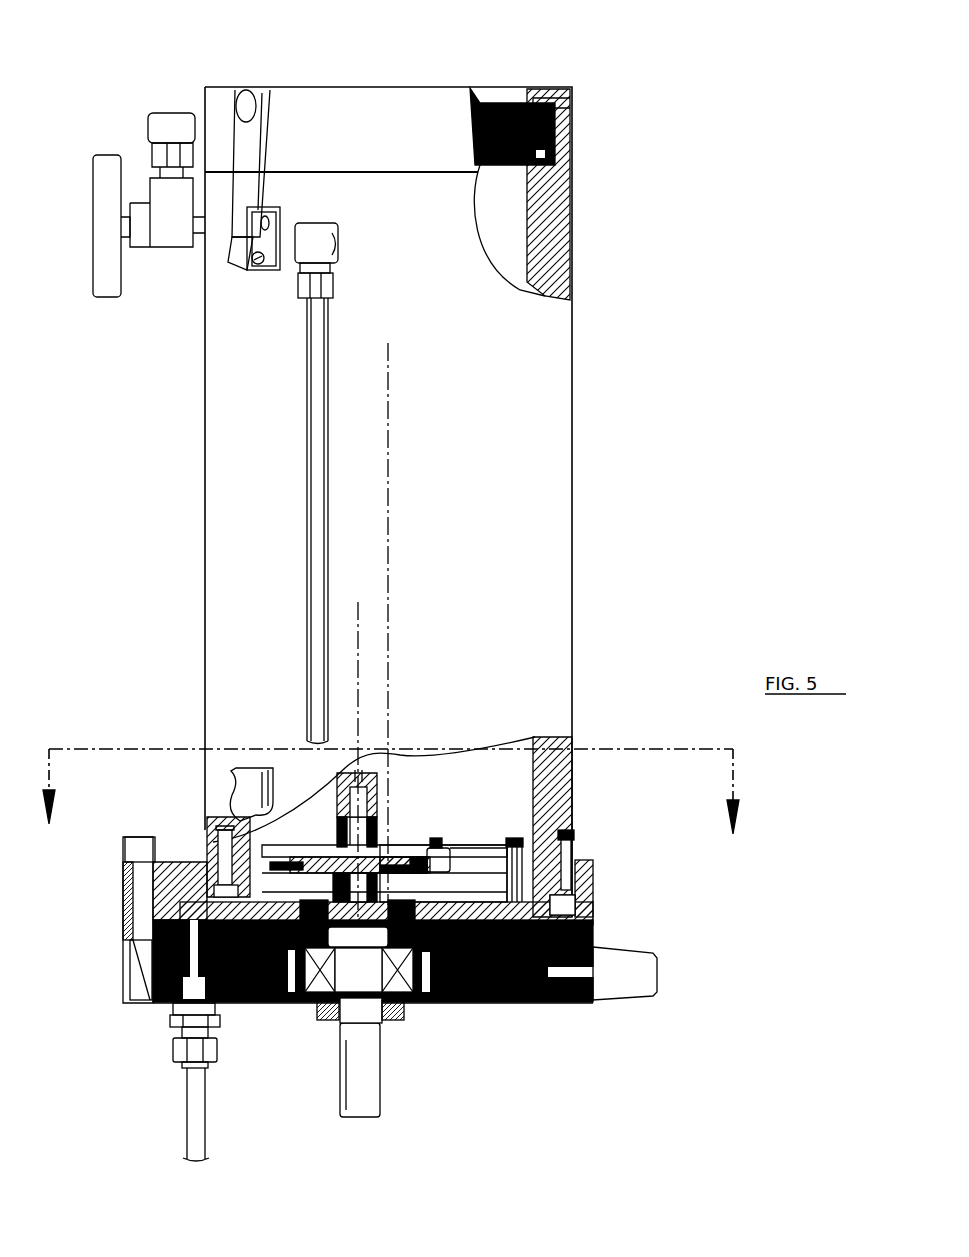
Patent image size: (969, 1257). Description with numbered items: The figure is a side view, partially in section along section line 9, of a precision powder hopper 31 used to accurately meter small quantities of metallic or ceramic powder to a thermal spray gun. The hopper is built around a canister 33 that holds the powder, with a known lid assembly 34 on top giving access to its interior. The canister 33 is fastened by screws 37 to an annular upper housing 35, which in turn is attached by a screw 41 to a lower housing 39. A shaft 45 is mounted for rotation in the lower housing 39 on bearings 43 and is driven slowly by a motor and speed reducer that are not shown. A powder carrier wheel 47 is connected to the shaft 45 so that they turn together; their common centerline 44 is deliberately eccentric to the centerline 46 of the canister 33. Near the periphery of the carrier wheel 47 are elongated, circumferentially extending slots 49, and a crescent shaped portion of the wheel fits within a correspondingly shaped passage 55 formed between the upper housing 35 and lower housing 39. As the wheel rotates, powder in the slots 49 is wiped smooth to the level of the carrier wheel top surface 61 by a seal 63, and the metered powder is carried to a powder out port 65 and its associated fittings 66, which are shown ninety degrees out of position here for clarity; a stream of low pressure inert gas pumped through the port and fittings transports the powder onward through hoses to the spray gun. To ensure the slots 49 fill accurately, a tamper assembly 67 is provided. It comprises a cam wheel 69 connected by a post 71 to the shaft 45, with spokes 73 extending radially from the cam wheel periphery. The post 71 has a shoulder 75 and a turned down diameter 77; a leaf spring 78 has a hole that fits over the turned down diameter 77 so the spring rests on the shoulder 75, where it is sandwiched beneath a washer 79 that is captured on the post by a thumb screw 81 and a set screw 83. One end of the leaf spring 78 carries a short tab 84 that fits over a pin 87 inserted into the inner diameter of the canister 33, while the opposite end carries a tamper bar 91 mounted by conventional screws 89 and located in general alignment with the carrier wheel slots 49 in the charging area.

The section line 9 is at (391, 778).
The precision powder hopper 31 is at (572, 497).
The canister 33 is at (527, 640).
The lid assembly 34 is at (507, 88).
The upper housing 35 is at (580, 900).
The screws 37 is at (562, 855).
The lower housing 39 is at (587, 1005).
The screw 41 is at (143, 918).
The bearings 43 is at (415, 1005).
The common centerline 44 is at (355, 620).
The shaft 45 is at (370, 1075).
The centerline 46 is at (390, 612).
The powder carrier wheel 47 is at (491, 1005).
The slots 49 is at (540, 1005).
The passage 55 is at (158, 938).
The carrier wheel top surface 61 is at (457, 900).
The seal 63 is at (545, 890).
The powder out port 65 is at (150, 960).
The fittings 66 is at (190, 1050).
The tamper assembly 67 is at (338, 788).
The cam wheel 69 is at (398, 863).
The post 71 is at (350, 840).
The spokes 73 is at (425, 850).
The shoulder 75 is at (395, 855).
The turned down diameter 77 is at (337, 800).
The leaf spring 78 is at (483, 847).
The washer 79 is at (262, 852).
The thumb screw 81 is at (348, 796).
The set screw 83 is at (373, 762).
The tab 84 is at (272, 1005).
The pin 87 is at (222, 847).
The screws 89 is at (521, 838).
The tamper bar 91 is at (507, 837).